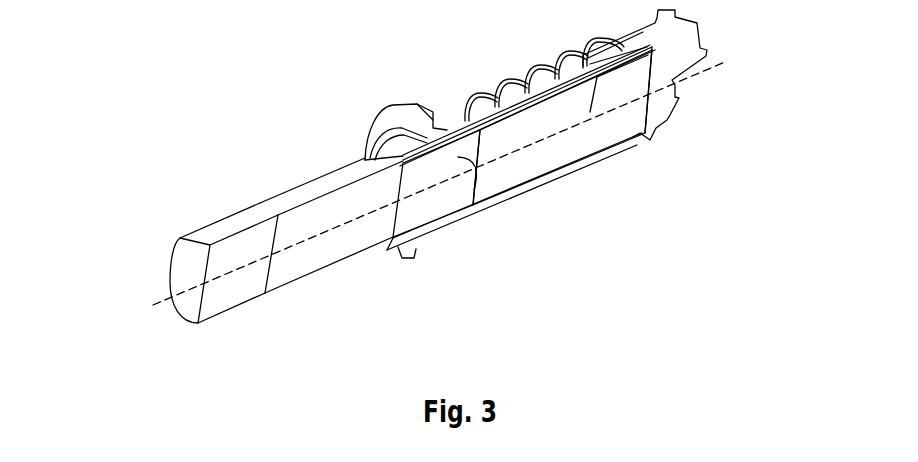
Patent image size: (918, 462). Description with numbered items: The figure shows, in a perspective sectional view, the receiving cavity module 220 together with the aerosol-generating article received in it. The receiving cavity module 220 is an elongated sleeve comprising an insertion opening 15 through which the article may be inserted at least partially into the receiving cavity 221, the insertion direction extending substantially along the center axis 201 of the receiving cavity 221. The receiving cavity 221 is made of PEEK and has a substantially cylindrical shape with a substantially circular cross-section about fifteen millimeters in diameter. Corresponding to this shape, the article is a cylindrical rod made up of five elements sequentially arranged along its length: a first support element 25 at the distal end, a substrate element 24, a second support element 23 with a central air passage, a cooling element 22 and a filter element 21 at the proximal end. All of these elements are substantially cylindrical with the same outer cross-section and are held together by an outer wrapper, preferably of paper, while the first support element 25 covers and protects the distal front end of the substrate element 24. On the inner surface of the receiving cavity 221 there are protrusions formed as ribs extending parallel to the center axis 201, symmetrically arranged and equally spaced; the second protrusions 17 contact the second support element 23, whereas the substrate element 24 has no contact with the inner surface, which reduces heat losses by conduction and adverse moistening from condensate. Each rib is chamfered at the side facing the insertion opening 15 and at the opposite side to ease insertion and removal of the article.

The insertion opening 15 is at (347, 166).
The second protrusions 17 is at (457, 120).
The filter element 21 is at (250, 293).
The cooling element 22 is at (347, 250).
The second support element 23 is at (435, 217).
The substrate element 24 is at (558, 145).
The first support element 25 is at (613, 127).
The center axis 201 is at (160, 302).
The receiving cavity module 220 is at (588, 174).
The receiving cavity 221 is at (547, 141).